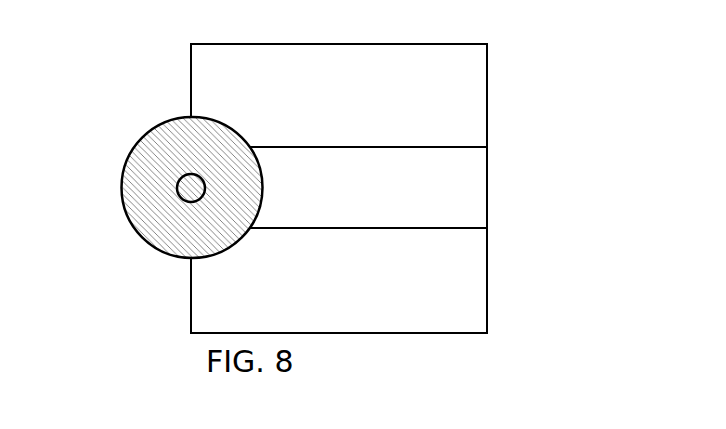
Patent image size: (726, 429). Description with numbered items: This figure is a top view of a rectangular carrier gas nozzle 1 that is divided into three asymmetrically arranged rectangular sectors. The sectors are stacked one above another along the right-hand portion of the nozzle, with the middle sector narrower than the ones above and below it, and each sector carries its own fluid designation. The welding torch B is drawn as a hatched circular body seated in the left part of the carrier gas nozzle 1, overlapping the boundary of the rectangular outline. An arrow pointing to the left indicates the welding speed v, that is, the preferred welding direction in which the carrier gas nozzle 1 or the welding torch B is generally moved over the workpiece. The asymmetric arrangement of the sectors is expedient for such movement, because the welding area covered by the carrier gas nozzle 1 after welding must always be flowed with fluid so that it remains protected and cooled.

The carrier gas nozzle 1 is at (550, 72).
The welding torch B is at (190, 188).
The welding speed v is at (87, 190).